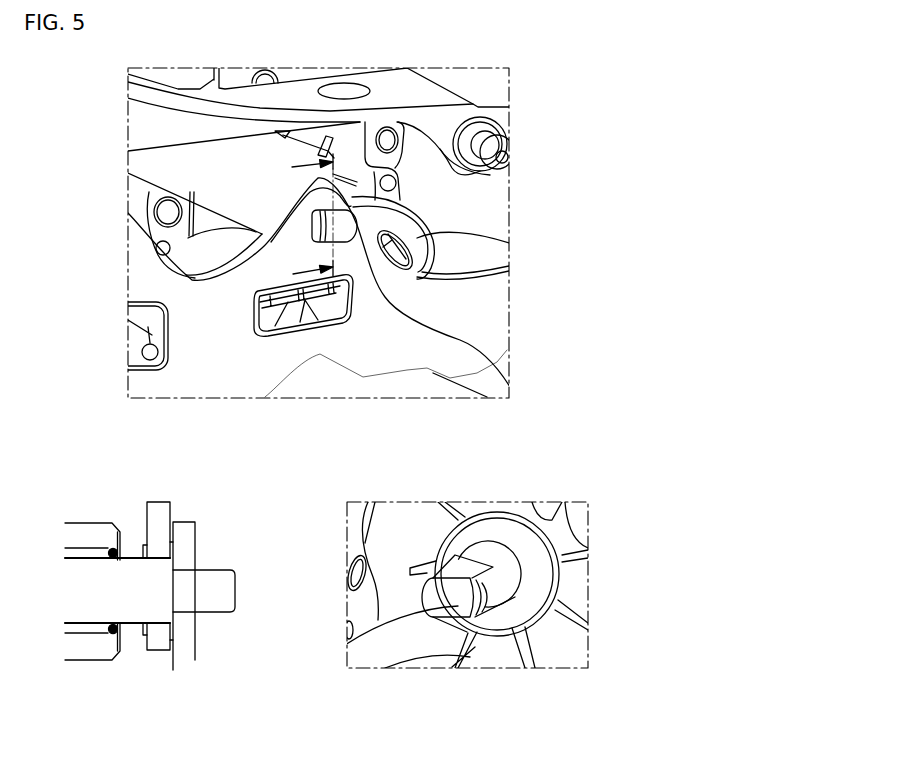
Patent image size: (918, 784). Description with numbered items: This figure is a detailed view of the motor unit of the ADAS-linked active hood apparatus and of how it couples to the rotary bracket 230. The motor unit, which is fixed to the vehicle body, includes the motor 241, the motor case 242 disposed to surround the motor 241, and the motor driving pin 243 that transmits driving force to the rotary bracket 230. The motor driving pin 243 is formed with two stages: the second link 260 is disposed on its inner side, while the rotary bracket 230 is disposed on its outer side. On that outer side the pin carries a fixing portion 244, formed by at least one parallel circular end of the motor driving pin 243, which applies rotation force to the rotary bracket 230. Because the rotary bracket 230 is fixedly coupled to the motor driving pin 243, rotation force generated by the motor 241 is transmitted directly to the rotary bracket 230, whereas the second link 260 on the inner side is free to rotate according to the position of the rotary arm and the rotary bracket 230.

The rotary bracket 230 is at (188, 658).
The motor 241 is at (85, 650).
The motor case 242 is at (509, 243).
The motor driving pin 243 is at (493, 552).
The fixing portion 244 is at (232, 620).
The second link 260 is at (157, 647).